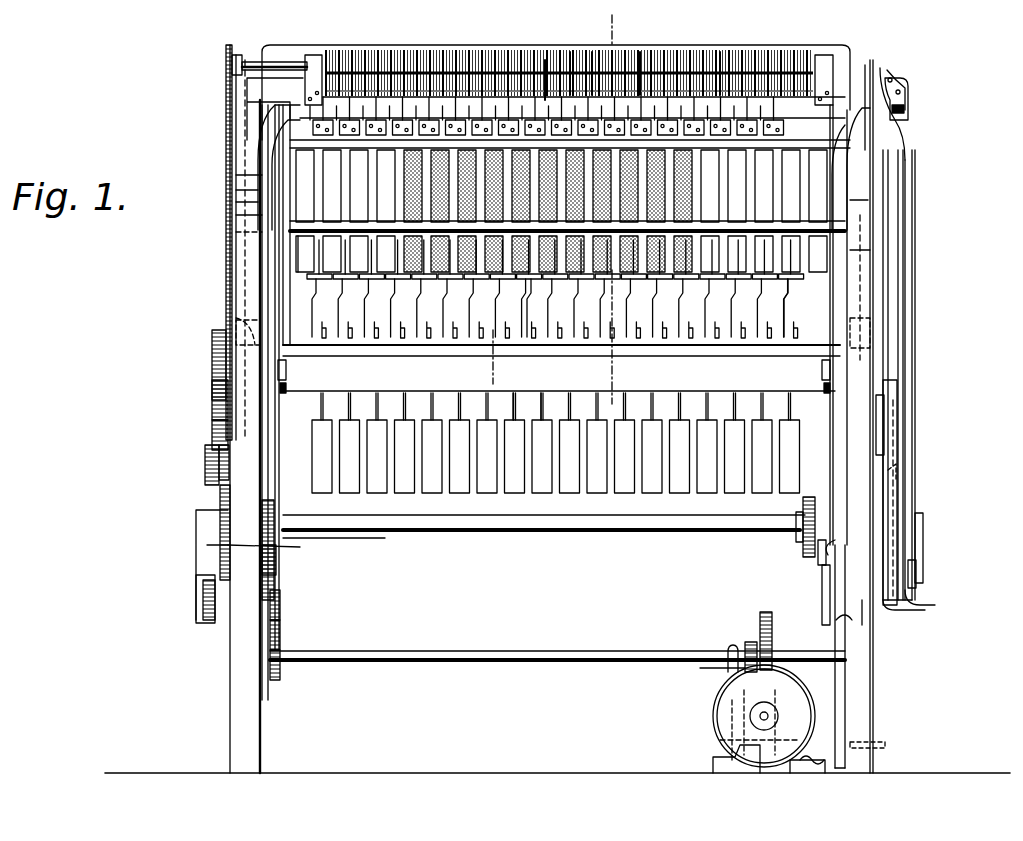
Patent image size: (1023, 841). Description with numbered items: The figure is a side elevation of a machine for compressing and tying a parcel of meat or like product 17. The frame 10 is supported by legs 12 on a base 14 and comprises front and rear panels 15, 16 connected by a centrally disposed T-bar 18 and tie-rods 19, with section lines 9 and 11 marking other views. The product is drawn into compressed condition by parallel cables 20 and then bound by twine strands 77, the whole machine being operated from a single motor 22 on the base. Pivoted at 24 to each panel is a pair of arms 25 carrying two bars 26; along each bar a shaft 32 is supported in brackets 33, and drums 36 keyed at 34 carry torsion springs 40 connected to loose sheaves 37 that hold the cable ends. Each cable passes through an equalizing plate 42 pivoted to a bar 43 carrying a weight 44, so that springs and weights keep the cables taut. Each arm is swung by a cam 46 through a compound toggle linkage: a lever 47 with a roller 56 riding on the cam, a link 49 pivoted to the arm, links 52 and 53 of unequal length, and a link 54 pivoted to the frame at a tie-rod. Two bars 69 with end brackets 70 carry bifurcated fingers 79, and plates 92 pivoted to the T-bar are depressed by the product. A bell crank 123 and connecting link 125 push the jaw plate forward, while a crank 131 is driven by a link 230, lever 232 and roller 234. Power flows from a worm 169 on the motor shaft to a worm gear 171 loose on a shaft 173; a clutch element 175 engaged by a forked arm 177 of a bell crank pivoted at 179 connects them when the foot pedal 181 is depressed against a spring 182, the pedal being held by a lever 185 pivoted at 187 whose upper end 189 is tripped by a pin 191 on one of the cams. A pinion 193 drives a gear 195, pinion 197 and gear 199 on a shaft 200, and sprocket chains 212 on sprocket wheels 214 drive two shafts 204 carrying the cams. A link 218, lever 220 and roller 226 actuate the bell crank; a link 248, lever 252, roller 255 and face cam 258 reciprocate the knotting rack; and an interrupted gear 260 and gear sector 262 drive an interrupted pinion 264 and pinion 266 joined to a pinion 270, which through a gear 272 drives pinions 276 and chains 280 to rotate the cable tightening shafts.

The section line 9- 9 is at (612, 12).
The frame 10 is at (240, 292).
The section line 11- 11 is at (500, 228).
The legs 12 is at (240, 735).
The base 14 is at (412, 771).
The front panel 15 is at (858, 298).
The rear panel 16 is at (250, 255).
The parcel of meat or like product 17 is at (540, 295).
The T-bar 18 is at (561, 363).
The tie-rods 19 is at (298, 245).
The cables 20 is at (236, 190).
The motor 22 is at (717, 715).
The pivot 24 is at (236, 318).
The arms 25 is at (266, 165).
The bars 26 is at (290, 48).
The shaft 32 is at (258, 60).
The brackets 33 is at (318, 58).
The keying 34 is at (480, 60).
The drums 36 is at (640, 60).
The sheaves 37 is at (592, 58).
The torsion spring 40 is at (720, 60).
The equalizing plate 42 is at (790, 285).
The bar 43 is at (541, 420).
The weight 44 is at (683, 490).
The cam 46 is at (282, 572).
The lever 47 is at (286, 368).
The link 49 is at (258, 150).
The link 52 is at (236, 174).
The link 53 is at (275, 302).
The link 54 is at (245, 202).
The roller 56 is at (288, 386).
The bars 69 is at (318, 150).
The brackets 70 is at (275, 113).
The twine strands 77 is at (650, 185).
The fingers 79 is at (545, 100).
The plates 92 is at (760, 262).
The bell crank 123 is at (908, 100).
The connecting link 125 is at (906, 112).
The crank 131 is at (880, 72).
The worm 169 is at (745, 725).
The worm gear 171 is at (763, 612).
The shaft 173 is at (540, 651).
The clutch element 175 is at (730, 655).
The forked arm 177 is at (725, 668).
The pivot 179 is at (705, 760).
The foot pedal 181 is at (885, 745).
The spring 182 is at (870, 768).
The lever 185 is at (840, 680).
The pivot 187 is at (848, 622).
The upper end of lever 189 is at (864, 612).
The pin 191 is at (818, 550).
The pinion 193 is at (282, 683).
The gear 195 is at (282, 630).
The pinion 197 is at (282, 605).
The gear 199 is at (300, 547).
The shaft 200 is at (385, 538).
The shafts 204 is at (578, 535).
The sprocket chains 212 is at (796, 530).
The sprocket wheels 214 is at (803, 506).
The link 218 is at (900, 430).
The lever 220 is at (912, 602).
The roller 226 is at (925, 600).
The link 230 is at (915, 385).
The lever 232 is at (923, 550).
The roller 234 is at (916, 590).
The link 248 is at (890, 272).
The lever 252 is at (886, 445).
The roller 255 is at (900, 478).
The face cam 258 is at (897, 510).
The interrupted gear 260 is at (222, 532).
The gear sector 262 is at (205, 602).
The interrupted pinion 264 is at (205, 462).
The pinion 266 is at (205, 478).
The pinion 270 is at (212, 440).
The gear 272 is at (212, 402).
The pinions 276 is at (212, 350).
The chains 280 is at (228, 238).